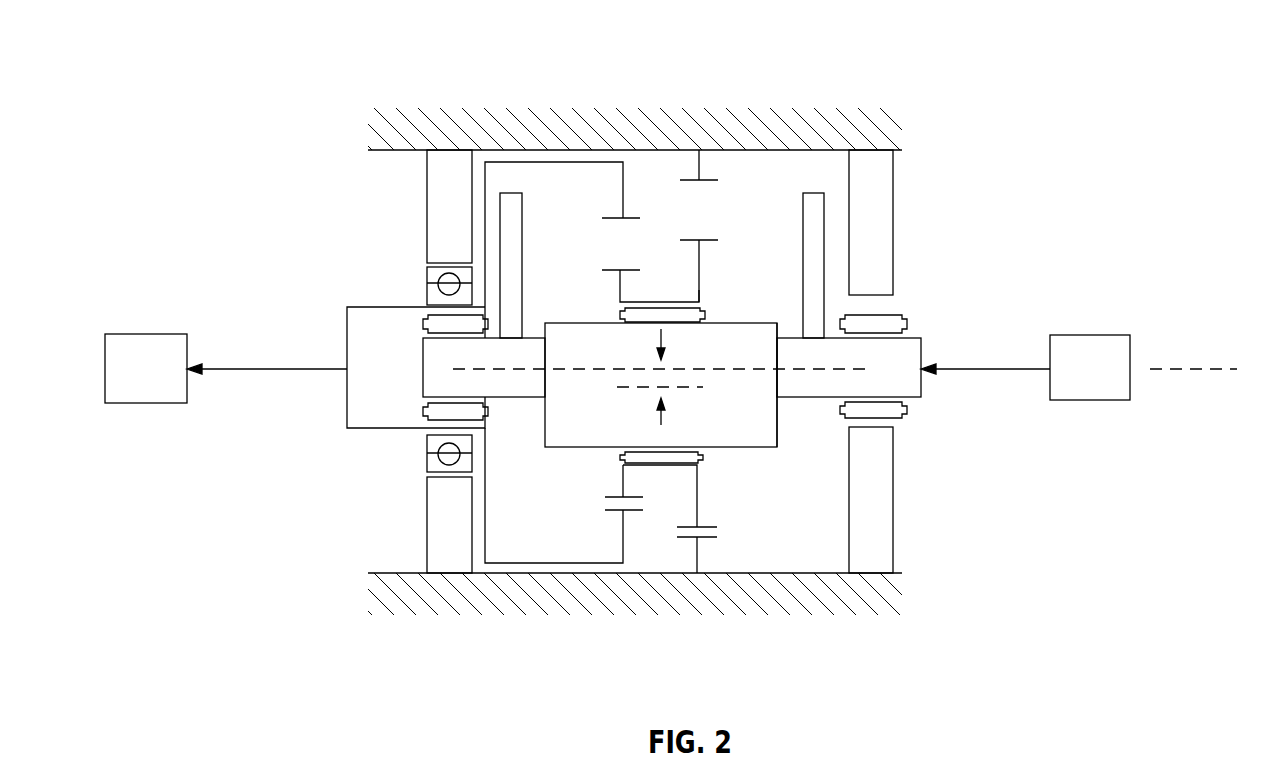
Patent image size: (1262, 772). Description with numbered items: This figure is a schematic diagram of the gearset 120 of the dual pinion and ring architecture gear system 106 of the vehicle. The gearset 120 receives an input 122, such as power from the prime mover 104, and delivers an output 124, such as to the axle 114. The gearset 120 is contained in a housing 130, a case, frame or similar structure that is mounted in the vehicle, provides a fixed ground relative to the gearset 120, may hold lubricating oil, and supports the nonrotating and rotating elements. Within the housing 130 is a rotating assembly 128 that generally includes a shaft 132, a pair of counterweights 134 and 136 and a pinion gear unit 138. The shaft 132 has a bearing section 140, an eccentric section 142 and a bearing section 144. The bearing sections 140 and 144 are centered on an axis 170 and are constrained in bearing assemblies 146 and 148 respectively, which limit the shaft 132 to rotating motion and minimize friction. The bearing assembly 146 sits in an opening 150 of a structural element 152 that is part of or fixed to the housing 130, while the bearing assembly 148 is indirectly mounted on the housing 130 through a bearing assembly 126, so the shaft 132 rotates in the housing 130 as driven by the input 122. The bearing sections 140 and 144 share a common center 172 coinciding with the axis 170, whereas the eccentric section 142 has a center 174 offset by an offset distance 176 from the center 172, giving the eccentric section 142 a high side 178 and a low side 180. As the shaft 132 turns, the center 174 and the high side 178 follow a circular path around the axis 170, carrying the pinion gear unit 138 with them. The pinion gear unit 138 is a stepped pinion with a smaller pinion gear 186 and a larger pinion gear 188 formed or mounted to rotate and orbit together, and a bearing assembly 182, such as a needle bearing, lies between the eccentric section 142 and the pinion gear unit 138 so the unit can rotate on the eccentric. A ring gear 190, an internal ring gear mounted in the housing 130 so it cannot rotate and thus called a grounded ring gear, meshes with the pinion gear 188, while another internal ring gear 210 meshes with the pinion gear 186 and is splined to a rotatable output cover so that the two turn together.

The prime mover 104 is at (1090, 333).
The gear system 106 is at (808, 76).
The axle 114 is at (147, 333).
The gearset 120 is at (620, 293).
The input 122 is at (972, 365).
The output 124 is at (267, 367).
The bearing assembly 126 is at (432, 277).
The rotating assembly 128 is at (756, 296).
The housing 130 is at (415, 115).
The shaft 132 is at (918, 383).
The counterweight 134 is at (812, 192).
The counterweight 136 is at (600, 322).
The pinion gear unit 138 is at (720, 495).
The bearing section 140 is at (913, 335).
The eccentric section 142 is at (776, 413).
The bearing section 144 is at (423, 367).
The bearing assembly 146 is at (907, 410).
The bearing assembly 148 is at (437, 415).
The opening 150 is at (890, 300).
The structural element 152 is at (883, 443).
The axis 170 is at (1185, 367).
The center 172 is at (525, 369).
The center 174 is at (633, 388).
The offset distance 176 is at (663, 415).
The high side 178 is at (563, 447).
The low side 180 is at (511, 193).
The bearing assembly 182 is at (647, 465).
The pinion gear 186 is at (640, 172).
The pinion gear 188 is at (702, 282).
The ring gear 190 is at (696, 555).
The ring gear 210 is at (625, 547).